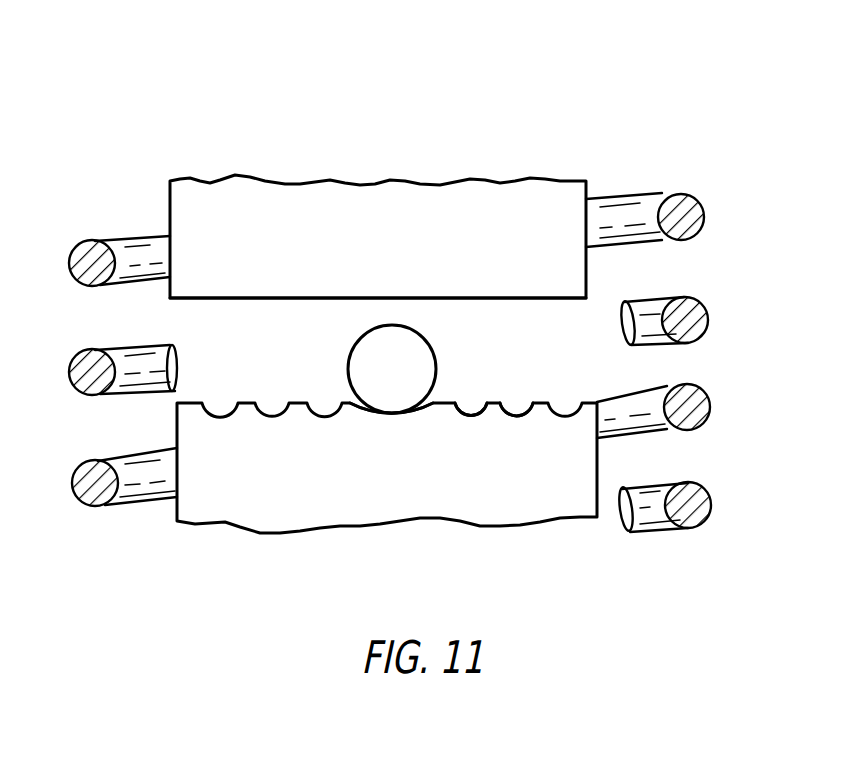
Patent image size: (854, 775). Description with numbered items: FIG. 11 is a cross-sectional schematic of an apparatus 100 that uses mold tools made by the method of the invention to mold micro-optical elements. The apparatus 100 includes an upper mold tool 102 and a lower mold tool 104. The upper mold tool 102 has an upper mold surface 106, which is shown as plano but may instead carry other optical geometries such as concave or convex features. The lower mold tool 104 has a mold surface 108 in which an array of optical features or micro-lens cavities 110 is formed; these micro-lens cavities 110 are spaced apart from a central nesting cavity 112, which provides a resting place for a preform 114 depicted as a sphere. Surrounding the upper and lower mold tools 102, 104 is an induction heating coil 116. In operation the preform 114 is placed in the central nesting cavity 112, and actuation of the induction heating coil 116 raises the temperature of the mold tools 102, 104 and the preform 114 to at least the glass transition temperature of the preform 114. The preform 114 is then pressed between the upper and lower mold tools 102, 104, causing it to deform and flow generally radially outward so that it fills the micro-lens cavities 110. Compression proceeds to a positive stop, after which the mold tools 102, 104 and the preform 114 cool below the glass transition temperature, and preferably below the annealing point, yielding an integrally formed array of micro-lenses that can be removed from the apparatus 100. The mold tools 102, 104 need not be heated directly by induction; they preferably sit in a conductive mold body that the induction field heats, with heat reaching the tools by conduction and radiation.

The apparatus 100 is at (400, 147).
The upper mold tool 102 is at (533, 183).
The lower mold tool 104 is at (445, 505).
The upper mold surface 106 is at (493, 300).
The mold surface 108 is at (443, 402).
The micro-lens cavities 110 is at (510, 403).
The central nesting cavity 112 is at (410, 415).
The preform 114 is at (360, 362).
The induction heating coil 116 is at (668, 435).